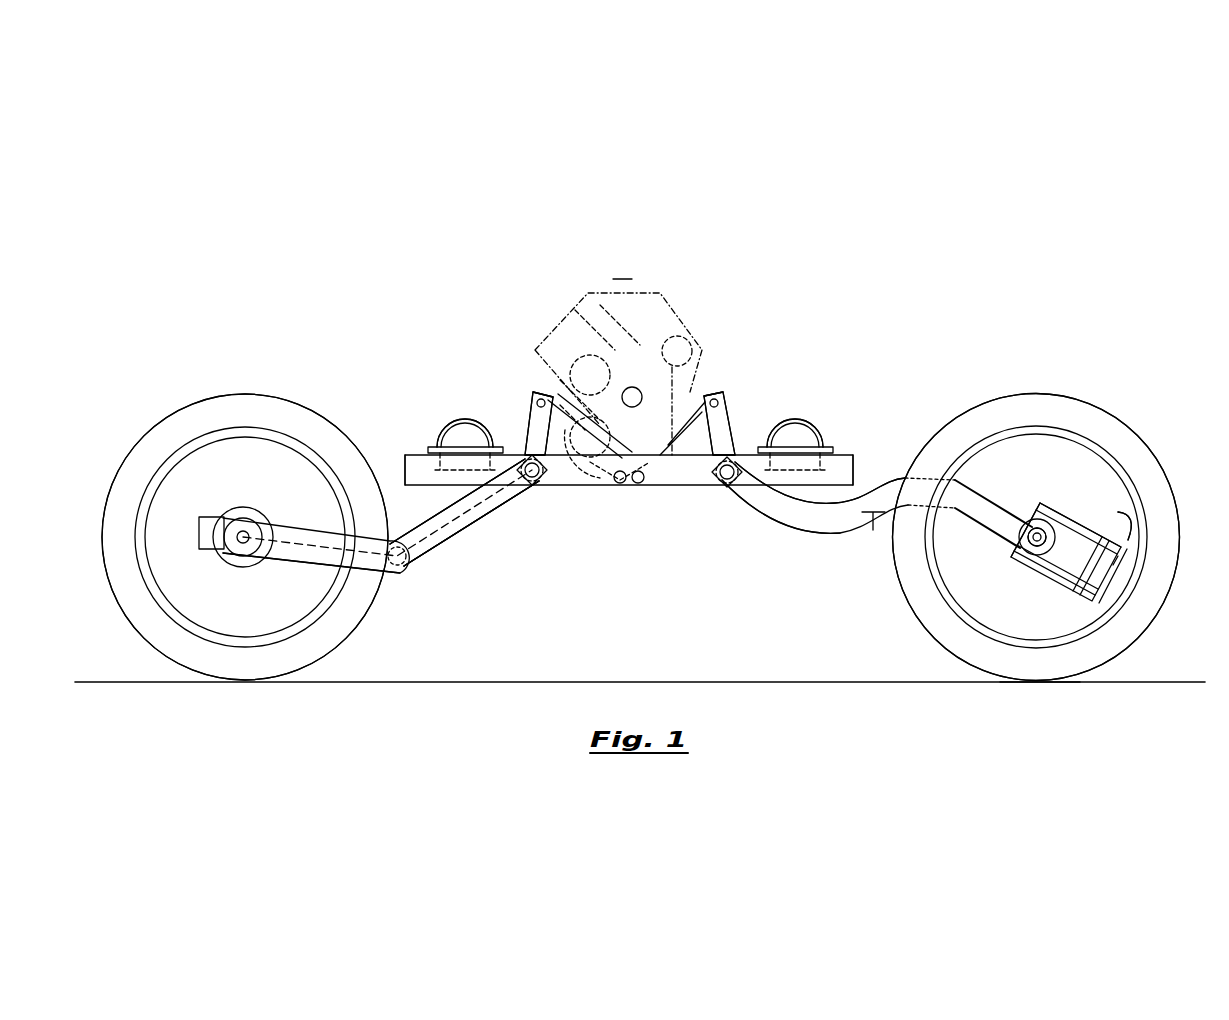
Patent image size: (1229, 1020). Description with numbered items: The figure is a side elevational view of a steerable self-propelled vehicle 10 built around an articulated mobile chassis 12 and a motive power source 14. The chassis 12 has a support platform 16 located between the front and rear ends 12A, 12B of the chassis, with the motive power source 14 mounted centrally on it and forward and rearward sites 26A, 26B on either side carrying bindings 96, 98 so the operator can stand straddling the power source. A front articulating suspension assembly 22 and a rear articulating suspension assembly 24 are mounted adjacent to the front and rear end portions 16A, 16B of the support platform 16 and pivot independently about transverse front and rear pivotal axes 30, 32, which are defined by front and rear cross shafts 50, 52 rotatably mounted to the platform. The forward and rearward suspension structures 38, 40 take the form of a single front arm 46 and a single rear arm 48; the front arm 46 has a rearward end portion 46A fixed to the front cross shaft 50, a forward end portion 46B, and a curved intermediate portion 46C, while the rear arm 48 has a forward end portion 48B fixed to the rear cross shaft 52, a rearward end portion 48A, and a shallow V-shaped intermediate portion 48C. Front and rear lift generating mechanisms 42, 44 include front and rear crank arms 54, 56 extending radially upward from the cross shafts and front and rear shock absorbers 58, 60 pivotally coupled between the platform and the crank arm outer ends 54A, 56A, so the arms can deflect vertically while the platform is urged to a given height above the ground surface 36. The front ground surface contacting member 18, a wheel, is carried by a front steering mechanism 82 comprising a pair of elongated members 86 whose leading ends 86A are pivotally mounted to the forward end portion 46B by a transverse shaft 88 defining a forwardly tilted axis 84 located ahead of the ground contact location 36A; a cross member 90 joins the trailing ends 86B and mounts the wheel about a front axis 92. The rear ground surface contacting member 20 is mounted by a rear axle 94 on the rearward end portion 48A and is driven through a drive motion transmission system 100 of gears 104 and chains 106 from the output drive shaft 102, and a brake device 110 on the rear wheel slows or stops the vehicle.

The self-propelled vehicle 10 is at (800, 292).
The mobile chassis 12 is at (745, 612).
The front end of chassis 12A is at (1036, 524).
The rear end of chassis 12B is at (245, 523).
The motive power source 14 is at (637, 350).
The support platform 16 is at (662, 490).
The front end portion of support platform 16A is at (852, 457).
The rear end portion of support platform 16B is at (406, 457).
The front ground surface contacting member 18 is at (1123, 427).
The rear ground surface contacting member 20 is at (248, 395).
The front articulating suspension assembly 22 is at (828, 552).
The rear articulating suspension assembly 24 is at (420, 574).
The forward site 26A is at (795, 445).
The rearward site 26B is at (465, 445).
The front pivotal axis 30 is at (733, 486).
The rear pivotal axis 32 is at (515, 500).
The ground surface 36 is at (1150, 684).
The ground contact location 36A is at (1043, 684).
The forward suspension structure 38 is at (890, 482).
The rearward suspension structure 40 is at (494, 524).
The front lift generating mechanism 42 is at (738, 390).
The rear lift generating mechanism 44 is at (520, 390).
The single front arm 46 is at (882, 537).
The rearward end portion of front arm 46A is at (760, 502).
The forward end portion of front arm 46B is at (988, 507).
The intermediate portion of front arm 46C is at (873, 532).
The single rear arm 48 is at (406, 567).
The rearward end portion of rear arm 48A is at (285, 548).
The forward end portion of rear arm 48B is at (482, 518).
The intermediate portion of rear arm 48C is at (402, 574).
The front cross shaft 50 is at (727, 488).
The rear cross shaft 52 is at (540, 482).
The front crank arm 54 is at (722, 418).
The outer end of front crank arm 54A is at (718, 392).
The rear crank arm 56 is at (530, 418).
The outer end of rear crank arm 56A is at (538, 392).
The front shock absorber 58 is at (662, 484).
The rear shock absorber 60 is at (545, 478).
The front steering mechanism 82 is at (1082, 498).
The steering axis 84 is at (1120, 510).
The elongated member 86 is at (1099, 566).
The leading end of elongated member 86A is at (1120, 557).
The trailing end of elongated member 86B is at (1041, 514).
The transverse shaft 88 is at (1130, 535).
The cross member 90 is at (1025, 539).
The front axis 92 is at (1041, 553).
The rear axle 94 is at (244, 533).
The binding 96 is at (812, 436).
The binding 98 is at (448, 436).
The drive motion transmission system 100 is at (442, 550).
The output drive shaft 102 is at (647, 440).
The gears 104 is at (236, 556).
The chains 106 is at (462, 505).
The brake device 110 is at (239, 530).